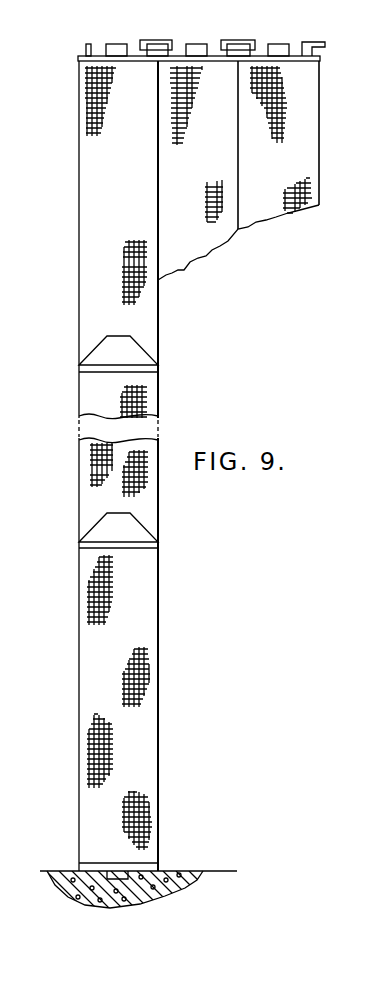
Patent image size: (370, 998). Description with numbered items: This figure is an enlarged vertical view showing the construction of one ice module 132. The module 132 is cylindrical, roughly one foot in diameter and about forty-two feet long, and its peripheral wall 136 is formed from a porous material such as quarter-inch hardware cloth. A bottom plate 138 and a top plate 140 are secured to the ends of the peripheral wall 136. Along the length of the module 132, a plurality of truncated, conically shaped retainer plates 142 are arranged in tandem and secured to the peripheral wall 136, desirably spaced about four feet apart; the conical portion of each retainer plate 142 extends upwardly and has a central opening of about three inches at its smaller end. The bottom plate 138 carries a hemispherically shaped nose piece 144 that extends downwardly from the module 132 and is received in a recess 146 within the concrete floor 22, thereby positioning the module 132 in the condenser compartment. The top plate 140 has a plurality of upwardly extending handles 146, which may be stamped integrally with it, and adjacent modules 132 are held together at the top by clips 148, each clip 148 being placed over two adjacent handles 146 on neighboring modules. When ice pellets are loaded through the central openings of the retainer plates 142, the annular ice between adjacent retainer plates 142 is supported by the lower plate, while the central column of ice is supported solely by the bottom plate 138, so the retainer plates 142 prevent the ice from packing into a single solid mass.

The concrete floor 22 is at (183, 878).
The module 132 is at (211, 412).
The peripheral wall 136 is at (158, 625).
The bottom plate 138 is at (158, 866).
The top plate 140 is at (78, 60).
The retainer plate 142 is at (142, 359).
The nose piece 144 is at (146, 903).
The handle 146 is at (142, 47).
The clip 148 is at (153, 31).